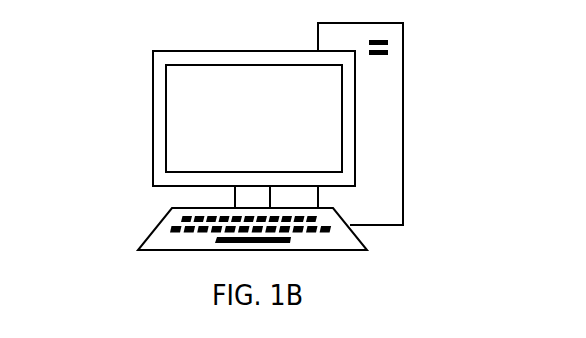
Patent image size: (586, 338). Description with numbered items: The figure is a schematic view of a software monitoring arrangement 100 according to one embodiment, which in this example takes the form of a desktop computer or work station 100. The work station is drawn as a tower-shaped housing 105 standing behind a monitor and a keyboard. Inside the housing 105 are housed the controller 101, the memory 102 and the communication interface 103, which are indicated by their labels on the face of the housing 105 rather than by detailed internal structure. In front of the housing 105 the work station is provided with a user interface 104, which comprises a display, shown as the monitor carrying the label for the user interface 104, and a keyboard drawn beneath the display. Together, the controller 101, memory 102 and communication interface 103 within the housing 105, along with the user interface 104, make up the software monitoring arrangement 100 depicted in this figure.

The software monitoring arrangement 100 is at (120, 98).
The controller 101 is at (381, 104).
The memory 102 is at (381, 134).
The communication interface 103 is at (381, 162).
The user interface 104 is at (254, 118).
The housing 105 is at (403, 68).